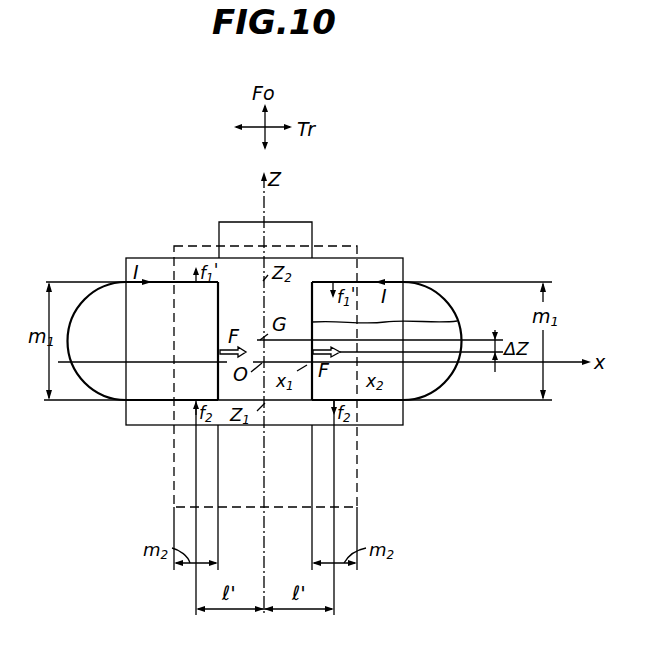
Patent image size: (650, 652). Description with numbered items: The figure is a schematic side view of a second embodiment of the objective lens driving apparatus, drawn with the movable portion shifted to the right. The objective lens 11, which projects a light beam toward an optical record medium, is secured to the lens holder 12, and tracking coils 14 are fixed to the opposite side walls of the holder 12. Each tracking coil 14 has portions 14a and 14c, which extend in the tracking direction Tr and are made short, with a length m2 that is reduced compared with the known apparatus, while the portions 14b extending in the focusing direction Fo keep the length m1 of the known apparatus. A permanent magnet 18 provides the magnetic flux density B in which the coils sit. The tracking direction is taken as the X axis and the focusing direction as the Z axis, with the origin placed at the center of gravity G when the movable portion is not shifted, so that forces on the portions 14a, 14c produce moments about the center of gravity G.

The objective lens 11 is at (308, 222).
The lens holder 12 is at (388, 258).
The tracking coils 14 is at (81, 303).
The portion of tracking coil 14a is at (183, 281).
The portion of tracking coil 14b is at (218, 324).
The portion of tracking coil 14c is at (215, 401).
The permanent magnet 18 is at (340, 246).